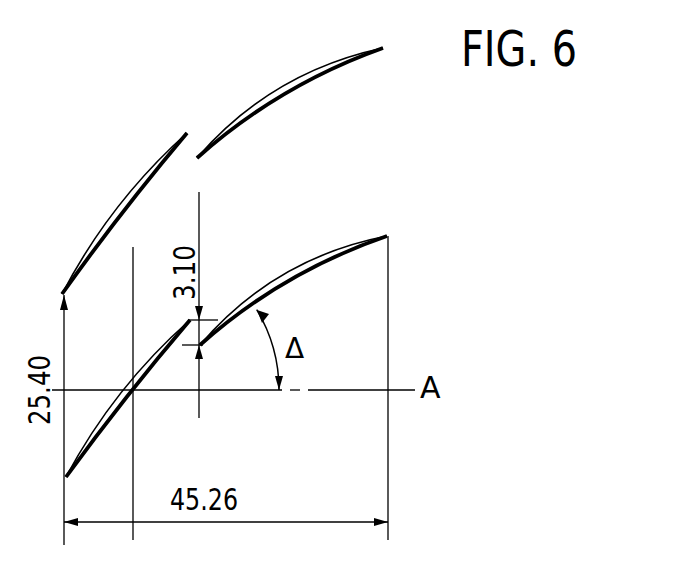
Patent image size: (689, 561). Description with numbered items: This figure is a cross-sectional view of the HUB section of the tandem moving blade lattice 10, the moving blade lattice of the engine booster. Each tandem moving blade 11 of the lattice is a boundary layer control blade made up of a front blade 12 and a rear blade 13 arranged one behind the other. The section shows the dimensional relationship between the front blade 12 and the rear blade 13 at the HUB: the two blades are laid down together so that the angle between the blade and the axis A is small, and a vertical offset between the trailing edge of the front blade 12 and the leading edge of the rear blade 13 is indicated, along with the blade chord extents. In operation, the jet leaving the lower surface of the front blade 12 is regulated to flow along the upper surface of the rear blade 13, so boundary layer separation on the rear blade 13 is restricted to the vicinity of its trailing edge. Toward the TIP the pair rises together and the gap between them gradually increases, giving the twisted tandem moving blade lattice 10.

The tandem moving blade lattice 10 is at (435, 190).
The tandem moving blade 11 is at (178, 112).
The front blade 12 is at (118, 200).
The rear blade 13 is at (275, 82).